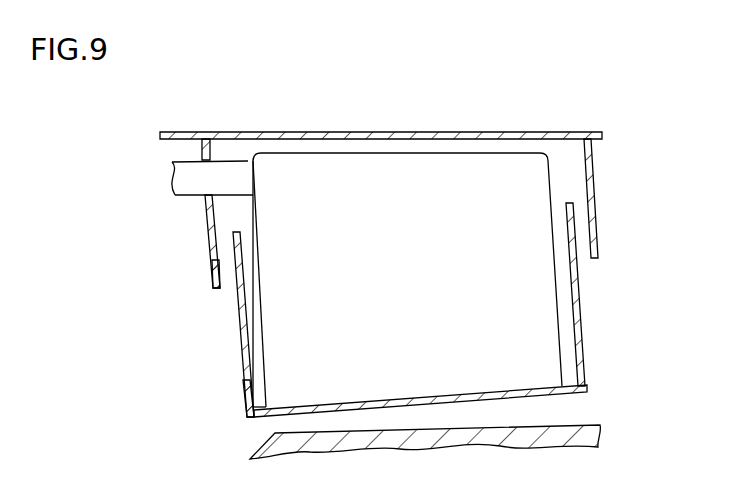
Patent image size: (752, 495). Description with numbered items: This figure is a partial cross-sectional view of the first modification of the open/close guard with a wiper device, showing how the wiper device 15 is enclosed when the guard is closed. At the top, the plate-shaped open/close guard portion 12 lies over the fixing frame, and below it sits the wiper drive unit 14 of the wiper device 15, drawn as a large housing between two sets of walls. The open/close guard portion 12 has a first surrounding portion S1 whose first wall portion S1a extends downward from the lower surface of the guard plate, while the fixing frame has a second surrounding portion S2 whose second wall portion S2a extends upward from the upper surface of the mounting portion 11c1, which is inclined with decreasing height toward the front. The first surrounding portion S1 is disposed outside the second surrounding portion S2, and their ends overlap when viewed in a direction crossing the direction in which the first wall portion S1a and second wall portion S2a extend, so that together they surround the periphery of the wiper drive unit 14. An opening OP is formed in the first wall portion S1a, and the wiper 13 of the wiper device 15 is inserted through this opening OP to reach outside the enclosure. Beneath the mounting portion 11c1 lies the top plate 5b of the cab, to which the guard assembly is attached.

The open/close guard portion 12 is at (410, 136).
The opening OP is at (200, 160).
The wiper 13 is at (193, 185).
The wiper drive unit 14 is at (520, 280).
The wiper device 15 is at (461, 189).
The first surrounding portion S1 is at (209, 238).
The first wall portion S1a is at (213, 279).
The second surrounding portion S2 is at (240, 338).
The second wall portion S2a is at (245, 382).
The mounting portion 11c1 is at (545, 393).
The top plate 5b is at (575, 441).